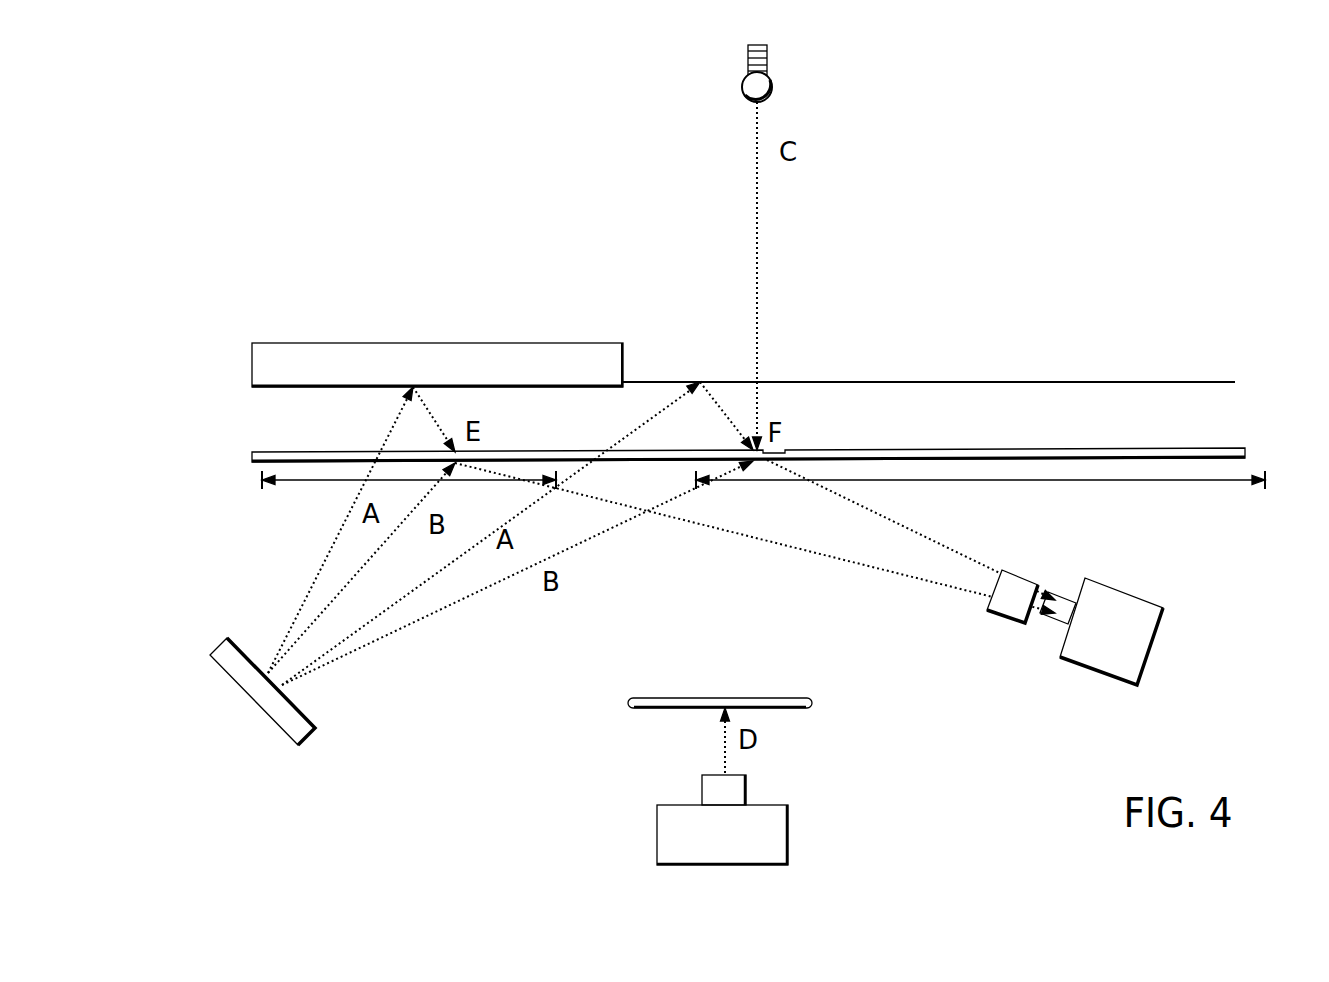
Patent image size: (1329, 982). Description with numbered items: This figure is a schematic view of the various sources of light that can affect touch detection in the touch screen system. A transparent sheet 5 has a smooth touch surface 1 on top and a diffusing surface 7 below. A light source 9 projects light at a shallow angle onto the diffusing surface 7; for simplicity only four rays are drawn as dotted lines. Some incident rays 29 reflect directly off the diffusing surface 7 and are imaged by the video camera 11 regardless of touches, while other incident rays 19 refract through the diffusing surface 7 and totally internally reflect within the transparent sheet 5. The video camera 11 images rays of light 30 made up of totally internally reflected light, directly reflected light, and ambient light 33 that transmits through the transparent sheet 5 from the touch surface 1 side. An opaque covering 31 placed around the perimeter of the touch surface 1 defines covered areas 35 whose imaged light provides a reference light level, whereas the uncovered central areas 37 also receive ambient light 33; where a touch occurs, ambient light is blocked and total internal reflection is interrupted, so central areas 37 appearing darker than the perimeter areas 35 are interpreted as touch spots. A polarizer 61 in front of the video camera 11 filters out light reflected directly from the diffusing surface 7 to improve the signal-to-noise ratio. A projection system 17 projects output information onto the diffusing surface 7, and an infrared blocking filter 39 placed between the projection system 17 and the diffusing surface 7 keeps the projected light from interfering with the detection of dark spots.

The touch surface 1 is at (1020, 381).
The transparent sheet 5 is at (1237, 409).
The diffusing surface 7 is at (252, 453).
The light source 9 is at (243, 698).
The video camera 11 is at (1127, 588).
The projection system 17 is at (725, 867).
The incident rays 19 is at (326, 558).
The incident rays 29 is at (355, 603).
The rays of light 30 is at (932, 542).
The opaque covering 31 is at (368, 343).
The ambient light 33 is at (773, 87).
The areas covered with the opaque covering 35 is at (317, 482).
The central areas 37 is at (977, 481).
The infrared blocking filter 39 is at (748, 698).
The polarizer 61 is at (1027, 575).